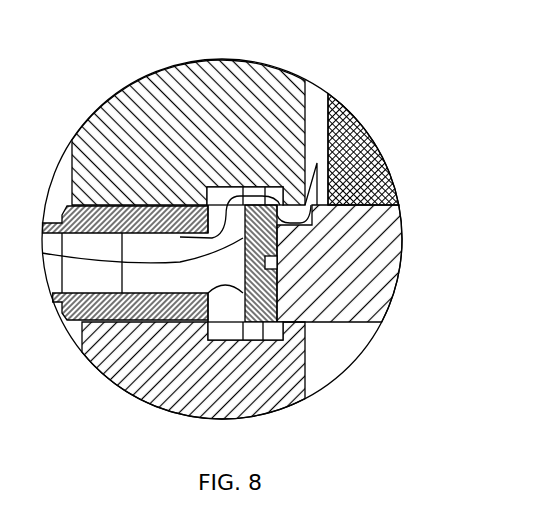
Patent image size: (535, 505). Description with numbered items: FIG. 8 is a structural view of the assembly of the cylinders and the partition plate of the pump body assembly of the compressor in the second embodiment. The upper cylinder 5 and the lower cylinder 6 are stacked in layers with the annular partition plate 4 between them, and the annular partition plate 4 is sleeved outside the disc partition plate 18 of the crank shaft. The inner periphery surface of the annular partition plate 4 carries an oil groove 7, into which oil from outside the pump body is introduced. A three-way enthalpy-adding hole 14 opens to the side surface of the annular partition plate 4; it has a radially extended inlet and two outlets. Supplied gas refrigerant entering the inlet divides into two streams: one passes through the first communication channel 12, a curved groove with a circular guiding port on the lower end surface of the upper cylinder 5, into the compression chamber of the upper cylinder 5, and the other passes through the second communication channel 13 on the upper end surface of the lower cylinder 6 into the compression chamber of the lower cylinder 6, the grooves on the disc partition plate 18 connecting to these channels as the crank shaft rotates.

The annular partition plate 4 is at (275, 298).
The upper cylinder 5 is at (238, 112).
The lower cylinder 6 is at (207, 378).
The oil groove 7 is at (272, 262).
The first communication channel 12 is at (217, 192).
The second communication channel 13 is at (228, 332).
The three-way enthalpy-adding hole 14 is at (140, 278).
The disc partition plate 18 is at (348, 229).